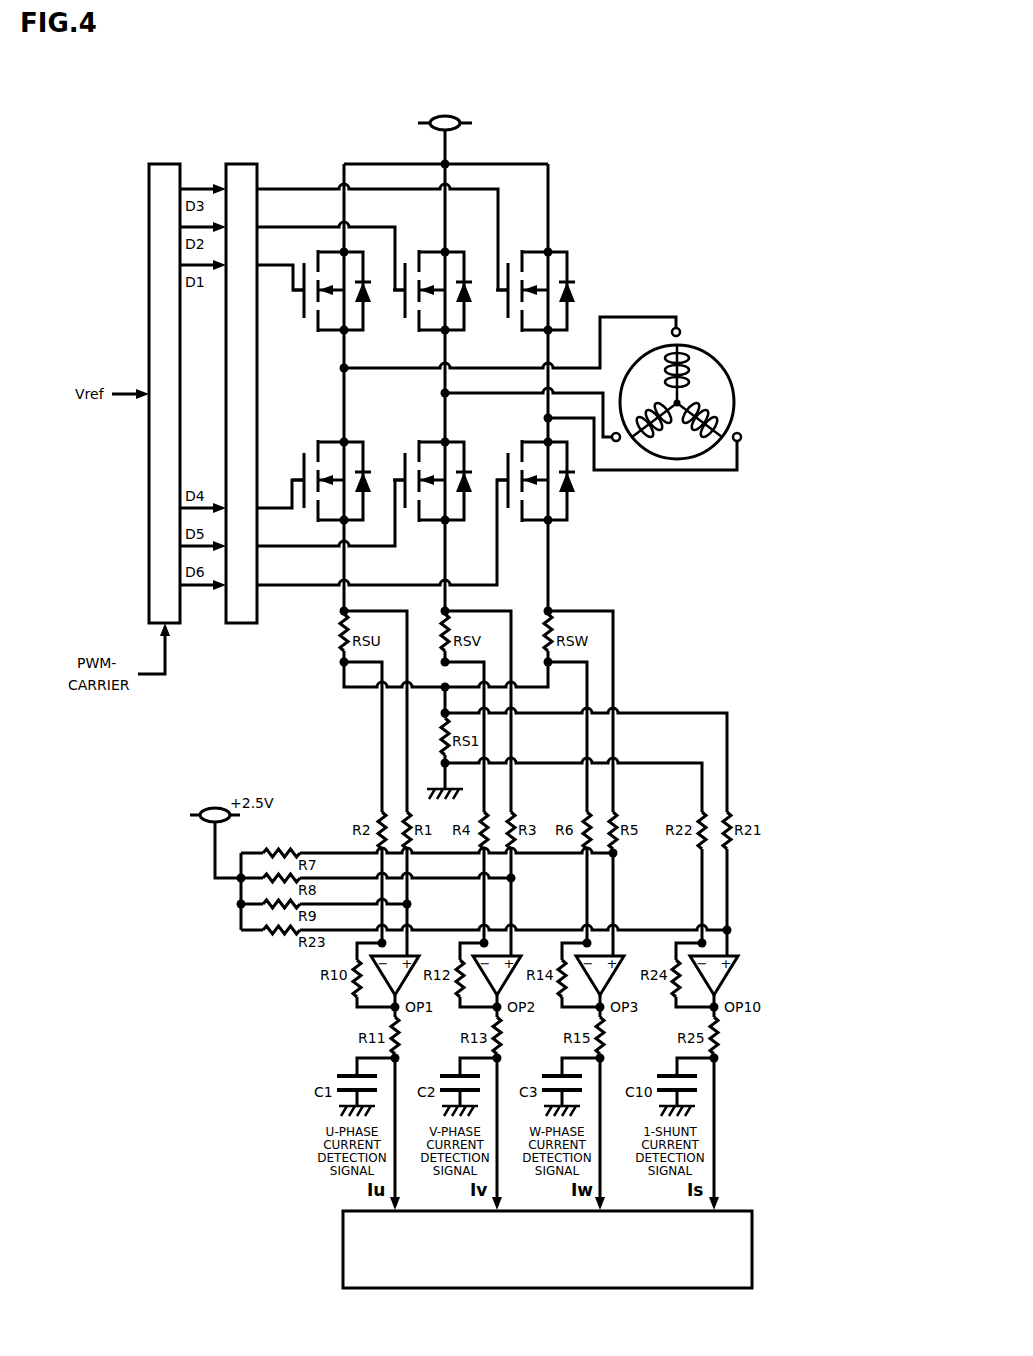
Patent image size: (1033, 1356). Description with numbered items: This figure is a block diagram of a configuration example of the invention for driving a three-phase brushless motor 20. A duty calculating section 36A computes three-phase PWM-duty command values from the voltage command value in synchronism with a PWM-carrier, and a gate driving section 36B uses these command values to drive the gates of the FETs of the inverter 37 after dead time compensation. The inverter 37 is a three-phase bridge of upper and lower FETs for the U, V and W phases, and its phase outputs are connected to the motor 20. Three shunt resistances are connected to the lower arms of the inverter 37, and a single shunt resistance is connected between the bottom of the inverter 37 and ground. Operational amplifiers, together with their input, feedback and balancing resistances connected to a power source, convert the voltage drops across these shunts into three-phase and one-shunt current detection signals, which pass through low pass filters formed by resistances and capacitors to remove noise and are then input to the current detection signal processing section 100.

The duty calculating section 36A is at (170, 164).
The gate driving section 36B is at (248, 164).
The inverter 37 is at (525, 133).
The motor 20 is at (709, 333).
The current detection signal processing section 100 is at (741, 1211).